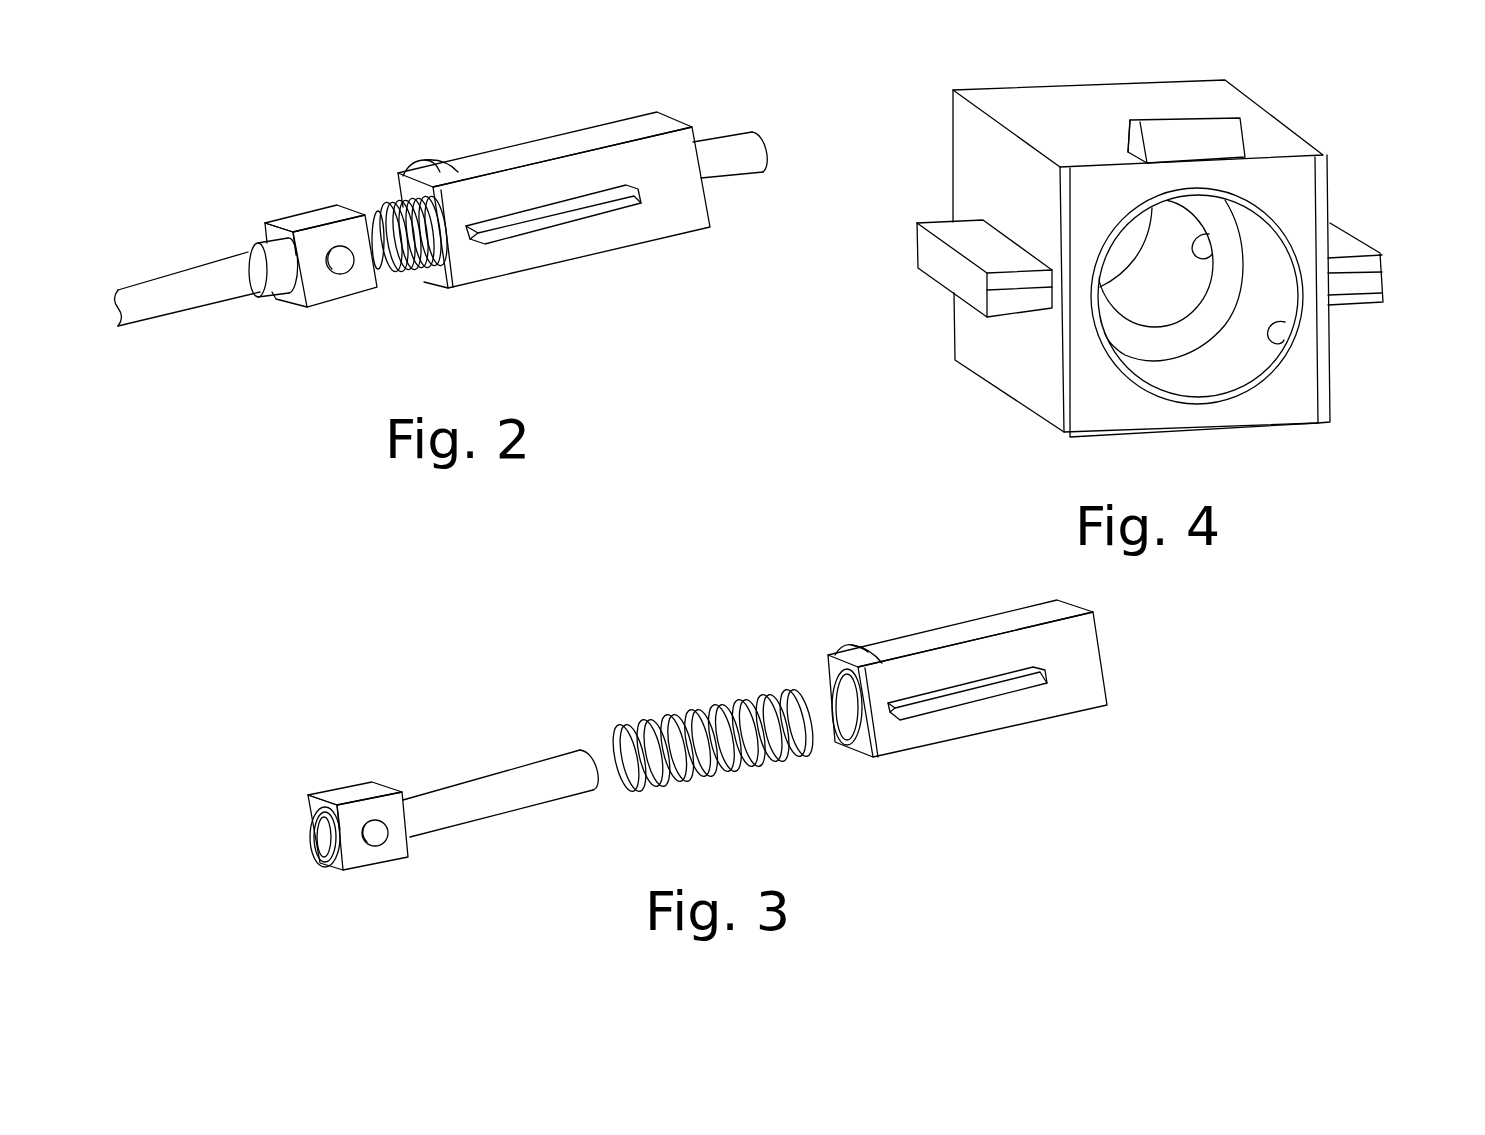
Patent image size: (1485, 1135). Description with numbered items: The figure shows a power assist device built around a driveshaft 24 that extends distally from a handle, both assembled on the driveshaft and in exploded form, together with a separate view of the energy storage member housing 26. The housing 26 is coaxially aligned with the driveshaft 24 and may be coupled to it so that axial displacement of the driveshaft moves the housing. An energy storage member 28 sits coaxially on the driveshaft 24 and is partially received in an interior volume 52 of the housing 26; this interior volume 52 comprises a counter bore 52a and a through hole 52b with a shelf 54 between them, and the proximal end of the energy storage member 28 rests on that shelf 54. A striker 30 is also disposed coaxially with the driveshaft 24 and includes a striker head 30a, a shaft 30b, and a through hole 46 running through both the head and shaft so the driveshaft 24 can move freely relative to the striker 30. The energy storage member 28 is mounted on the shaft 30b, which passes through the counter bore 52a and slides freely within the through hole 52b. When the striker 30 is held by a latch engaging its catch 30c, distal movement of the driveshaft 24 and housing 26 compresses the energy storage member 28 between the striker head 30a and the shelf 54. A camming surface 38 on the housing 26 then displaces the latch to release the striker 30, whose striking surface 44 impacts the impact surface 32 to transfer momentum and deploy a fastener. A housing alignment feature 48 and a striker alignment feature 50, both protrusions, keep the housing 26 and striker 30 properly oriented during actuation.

In FIG. 2, the driveshaft 24 is at (738, 162).
In FIG. 2, the energy storage member housing 26 is at (554, 179).
In FIG. 4, the energy storage member housing 26 is at (1189, 263).
In FIG. 3, the energy storage member housing 26 is at (938, 688).
In FIG. 2, the energy storage member 28 is at (400, 270).
In FIG. 3, the energy storage member 28 is at (705, 717).
In FIG. 2, the striker 30 is at (287, 281).
In FIG. 3, the striker head 30a is at (305, 802).
In FIG. 3, the shaft 30b is at (508, 787).
In FIG. 2, the catch 30c is at (276, 232).
In FIG. 3, the catch 30c is at (318, 808).
In FIG. 2, the impact surface 32 is at (273, 300).
In FIG. 2, the camming surface 38 is at (423, 168).
In FIG. 3, the striking surface 44 is at (330, 858).
In FIG. 3, the through hole 46 is at (323, 835).
In FIG. 2, the housing alignment feature 48 is at (562, 217).
In FIG. 2, the striker alignment feature 50 is at (340, 260).
In FIG. 3, the interior volume 52 is at (852, 708).
In FIG. 4, the counter bore 52a is at (1283, 325).
In FIG. 4, the through hole 52b is at (1210, 254).
In FIG. 4, the shelf 54 is at (1153, 345).